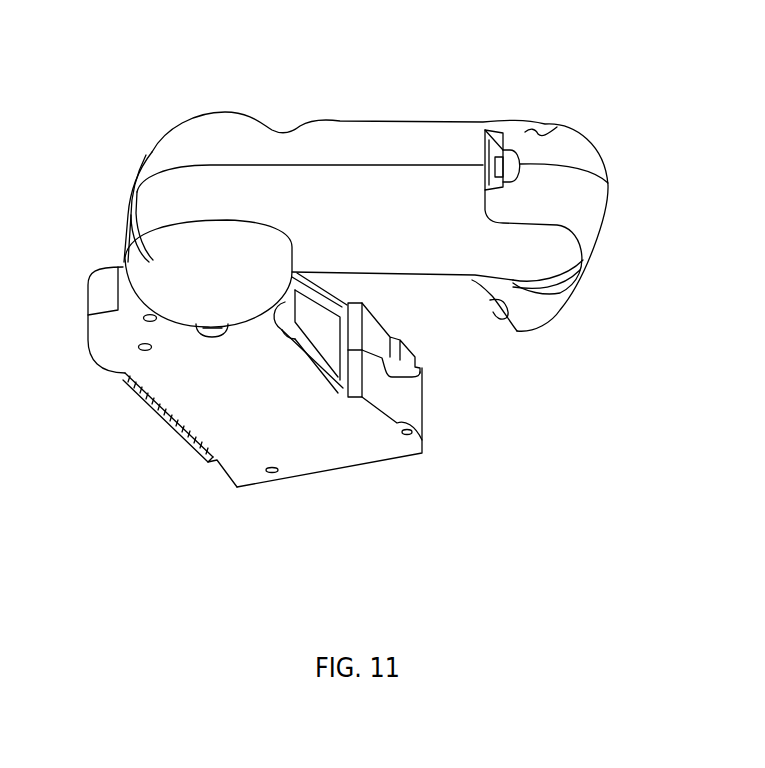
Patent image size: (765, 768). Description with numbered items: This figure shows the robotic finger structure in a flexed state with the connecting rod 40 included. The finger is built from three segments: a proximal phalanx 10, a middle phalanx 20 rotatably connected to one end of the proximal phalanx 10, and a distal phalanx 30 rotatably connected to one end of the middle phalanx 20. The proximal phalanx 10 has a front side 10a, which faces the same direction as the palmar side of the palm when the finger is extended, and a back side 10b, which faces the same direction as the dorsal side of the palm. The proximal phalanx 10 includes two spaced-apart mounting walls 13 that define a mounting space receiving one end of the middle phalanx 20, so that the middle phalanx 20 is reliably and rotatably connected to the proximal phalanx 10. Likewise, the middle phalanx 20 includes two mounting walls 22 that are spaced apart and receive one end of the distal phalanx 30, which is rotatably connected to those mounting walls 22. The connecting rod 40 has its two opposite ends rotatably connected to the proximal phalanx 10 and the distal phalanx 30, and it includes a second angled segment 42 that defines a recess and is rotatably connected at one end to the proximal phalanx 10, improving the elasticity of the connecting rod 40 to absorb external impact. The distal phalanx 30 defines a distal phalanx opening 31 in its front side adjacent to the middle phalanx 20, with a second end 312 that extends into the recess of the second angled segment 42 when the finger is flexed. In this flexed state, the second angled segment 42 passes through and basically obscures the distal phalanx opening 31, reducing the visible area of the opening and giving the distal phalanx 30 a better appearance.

The proximal phalanx 10 is at (248, 425).
The front side of the proximal phalanx 10a is at (387, 397).
The back side of the proximal phalanx 10b is at (215, 470).
The mounting walls 13 is at (213, 120).
The middle phalanx 20 is at (357, 150).
The mounting walls 22 is at (541, 125).
The distal phalanx 30 is at (545, 300).
The distal phalanx opening 31 is at (492, 130).
The second end 312 is at (507, 145).
The connecting rod 40 is at (486, 155).
The second angled segment 42 is at (494, 152).